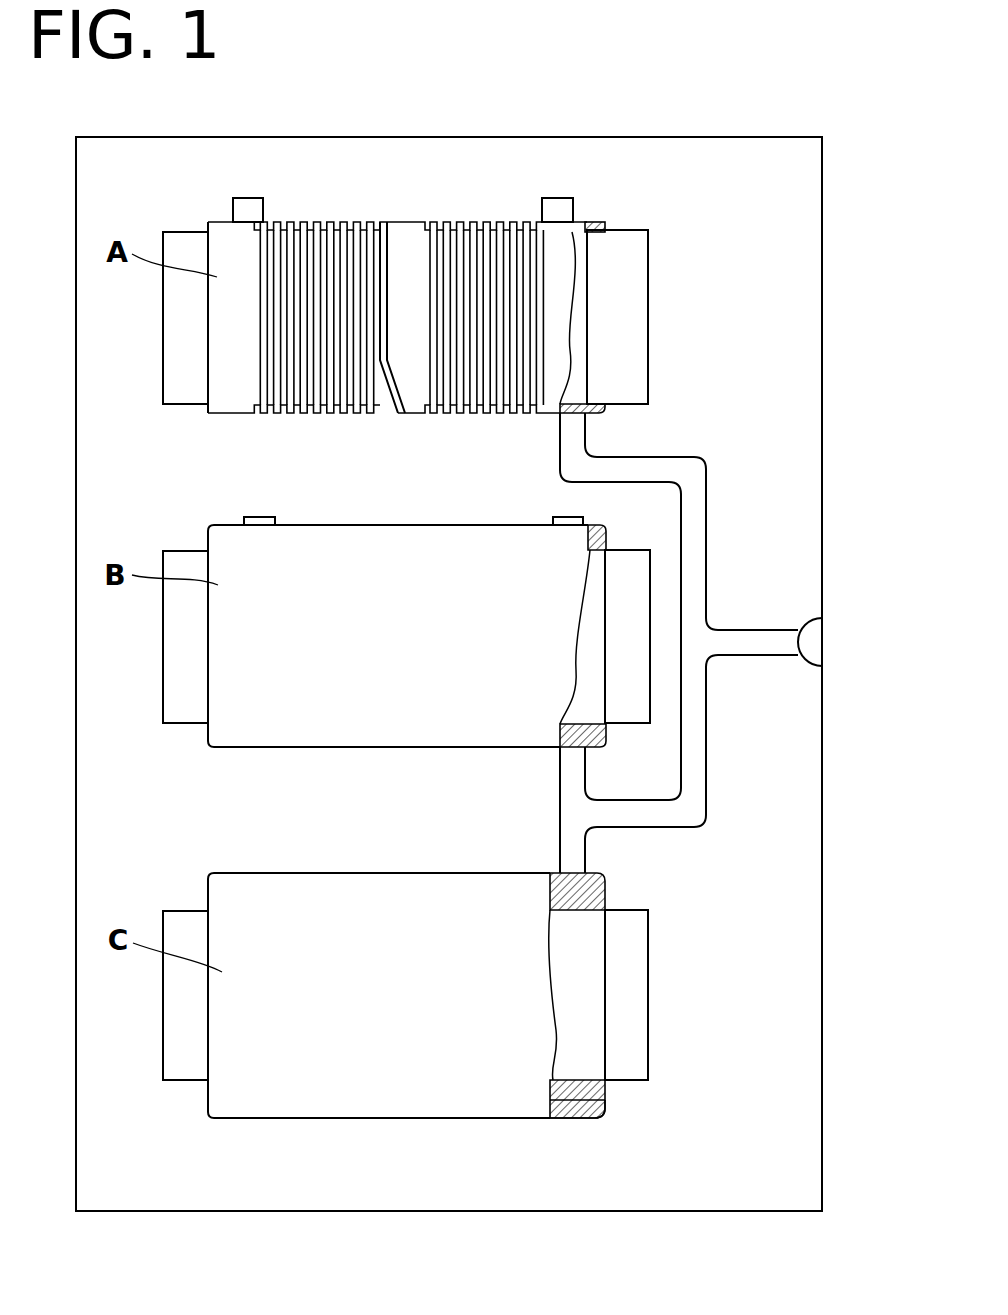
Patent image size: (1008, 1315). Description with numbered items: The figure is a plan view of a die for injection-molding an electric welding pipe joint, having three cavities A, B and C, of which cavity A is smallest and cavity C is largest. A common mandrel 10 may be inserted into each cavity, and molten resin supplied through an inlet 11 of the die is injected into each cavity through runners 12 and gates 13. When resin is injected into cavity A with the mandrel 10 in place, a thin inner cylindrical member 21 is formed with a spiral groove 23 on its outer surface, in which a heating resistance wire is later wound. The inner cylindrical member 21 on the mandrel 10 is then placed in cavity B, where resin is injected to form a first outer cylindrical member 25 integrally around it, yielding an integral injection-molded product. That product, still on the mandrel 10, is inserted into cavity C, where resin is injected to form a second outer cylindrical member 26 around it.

The mandrel 10 is at (647, 257).
The inlet 11 is at (825, 632).
The runners 12 is at (708, 710).
The gates 13 is at (560, 437).
The inner cylindrical member 21 is at (600, 222).
The spiral groove 23 is at (452, 222).
The first outer cylindrical member 25 is at (606, 529).
The second outer cylindrical member 26 is at (607, 1118).